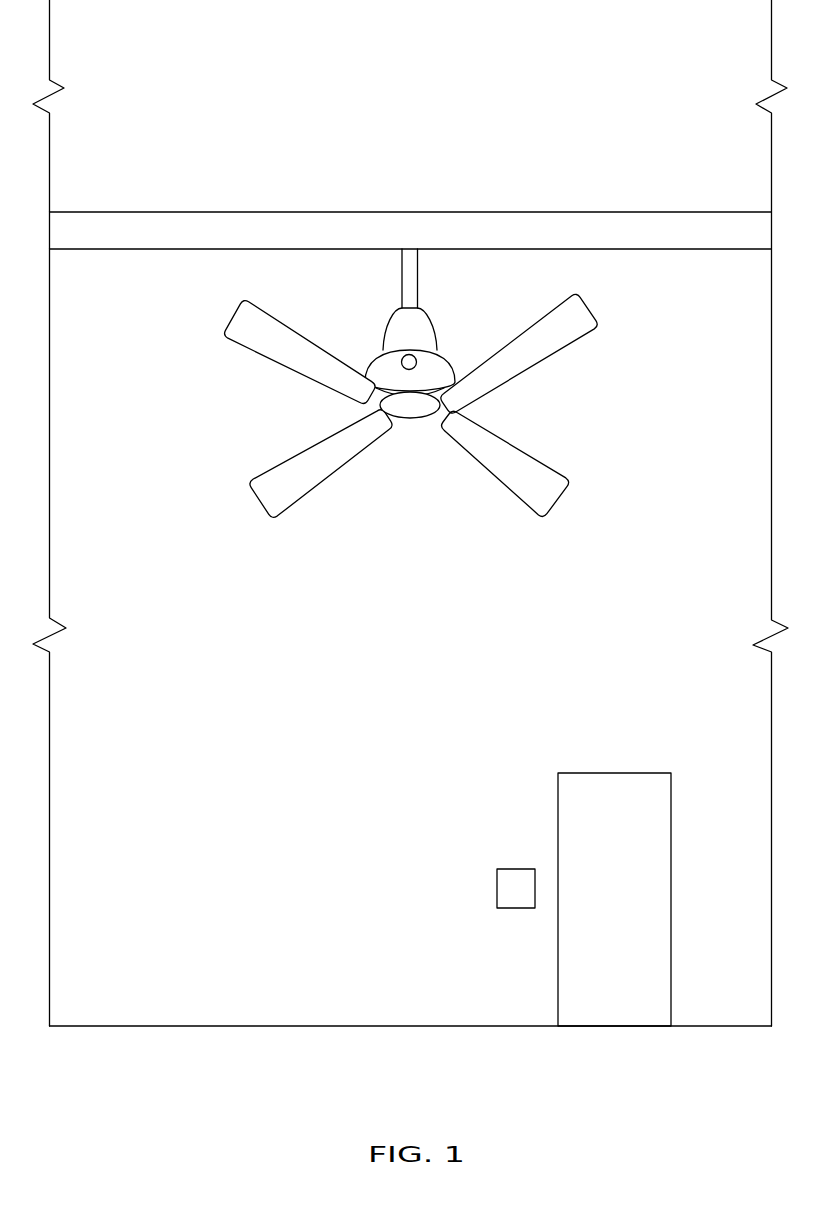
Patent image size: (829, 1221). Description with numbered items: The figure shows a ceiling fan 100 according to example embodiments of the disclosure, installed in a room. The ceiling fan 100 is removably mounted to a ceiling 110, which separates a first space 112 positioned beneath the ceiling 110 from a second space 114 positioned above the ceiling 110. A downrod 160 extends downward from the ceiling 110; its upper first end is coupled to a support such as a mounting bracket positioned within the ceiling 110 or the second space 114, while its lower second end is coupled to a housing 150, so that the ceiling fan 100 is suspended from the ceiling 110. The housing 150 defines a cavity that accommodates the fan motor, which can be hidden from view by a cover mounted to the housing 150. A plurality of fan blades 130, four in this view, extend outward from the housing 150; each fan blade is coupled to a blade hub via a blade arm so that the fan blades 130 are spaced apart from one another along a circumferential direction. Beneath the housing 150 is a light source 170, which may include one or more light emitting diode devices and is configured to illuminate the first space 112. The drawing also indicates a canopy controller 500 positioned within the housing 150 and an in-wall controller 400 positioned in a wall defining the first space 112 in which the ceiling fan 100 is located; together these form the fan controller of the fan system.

The ceiling fan 100 is at (194, 306).
The ceiling 110 is at (430, 241).
The first space 112 is at (222, 697).
The second space 114 is at (432, 97).
The fan blades 130 is at (250, 338).
The housing 150 is at (378, 352).
The downrod 160 is at (418, 290).
The light source 170 is at (412, 419).
The in-wall controller 400 is at (507, 889).
The canopy controller 500 is at (417, 360).